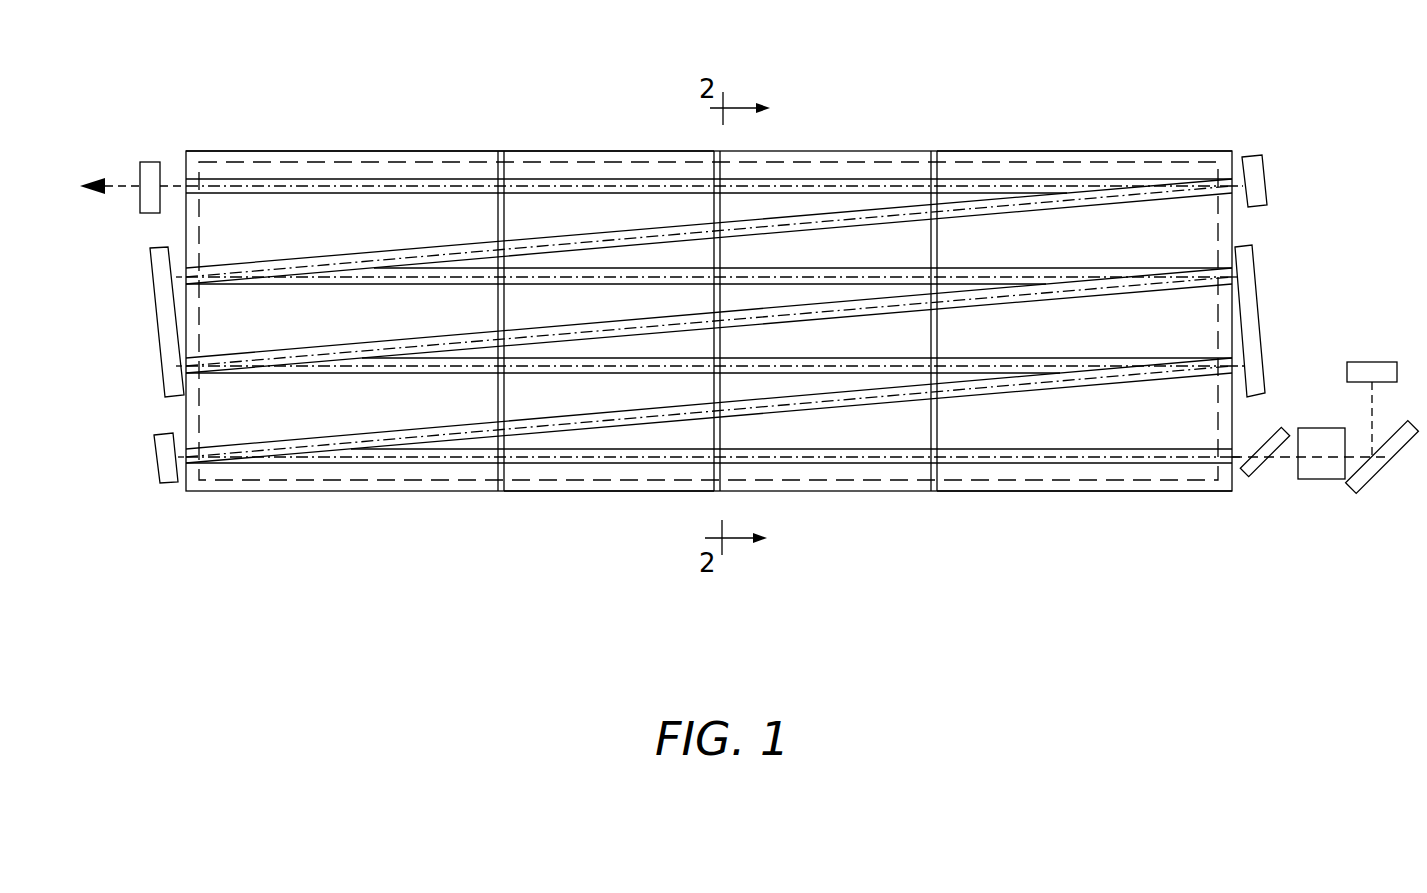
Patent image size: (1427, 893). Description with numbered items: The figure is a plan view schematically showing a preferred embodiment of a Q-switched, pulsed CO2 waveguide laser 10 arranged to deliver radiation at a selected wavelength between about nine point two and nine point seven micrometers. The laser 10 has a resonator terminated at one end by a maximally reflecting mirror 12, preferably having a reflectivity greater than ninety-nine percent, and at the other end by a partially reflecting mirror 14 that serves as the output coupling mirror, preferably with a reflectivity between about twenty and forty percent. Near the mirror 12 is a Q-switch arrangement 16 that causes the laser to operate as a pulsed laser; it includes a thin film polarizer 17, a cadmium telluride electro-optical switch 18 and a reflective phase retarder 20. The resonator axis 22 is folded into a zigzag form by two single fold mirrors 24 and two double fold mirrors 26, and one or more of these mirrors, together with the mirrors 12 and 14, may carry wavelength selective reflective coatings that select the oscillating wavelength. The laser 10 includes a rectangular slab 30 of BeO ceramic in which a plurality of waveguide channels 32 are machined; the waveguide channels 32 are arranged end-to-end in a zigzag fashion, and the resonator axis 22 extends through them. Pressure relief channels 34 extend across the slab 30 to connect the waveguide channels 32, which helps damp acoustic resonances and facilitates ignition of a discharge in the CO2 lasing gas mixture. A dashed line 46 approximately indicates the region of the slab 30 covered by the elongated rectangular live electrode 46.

The laser 10 is at (947, 620).
The maximally reflecting mirror 12 is at (1375, 362).
The partially reflecting mirror 14 is at (150, 166).
The Q-switch arrangement 16 is at (1296, 560).
The thin film polarizer 17 is at (1266, 470).
The electro-optical switch 18 is at (1318, 478).
The reflective phase retarder 20 is at (1388, 472).
The resonator axis 22 is at (1102, 187).
The single fold mirror 24 is at (1256, 163).
The double fold mirror 26 is at (1246, 285).
The slab 30 is at (392, 502).
The waveguide channels 32 is at (775, 212).
The pressure relief channels 34 is at (497, 170).
The electrode 46 is at (270, 162).